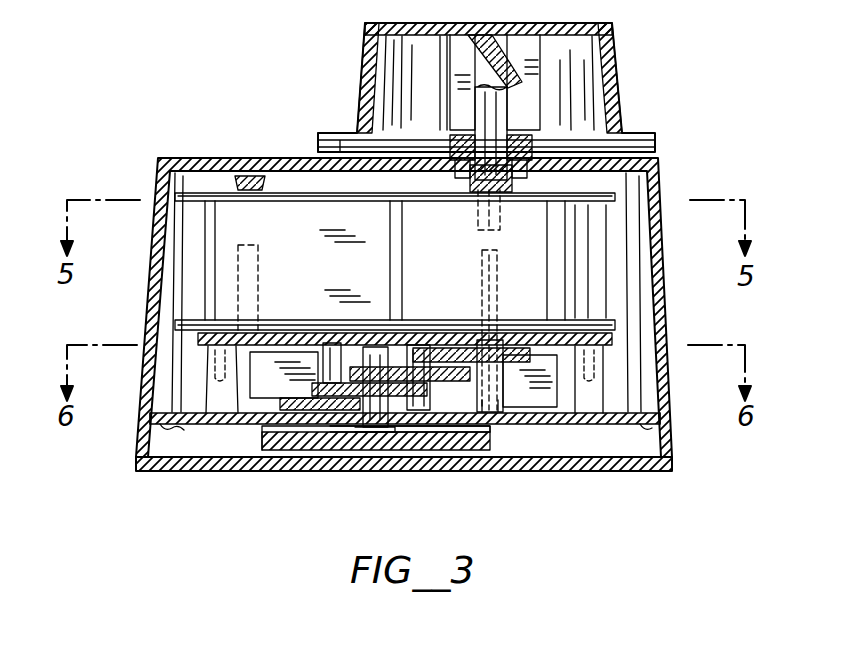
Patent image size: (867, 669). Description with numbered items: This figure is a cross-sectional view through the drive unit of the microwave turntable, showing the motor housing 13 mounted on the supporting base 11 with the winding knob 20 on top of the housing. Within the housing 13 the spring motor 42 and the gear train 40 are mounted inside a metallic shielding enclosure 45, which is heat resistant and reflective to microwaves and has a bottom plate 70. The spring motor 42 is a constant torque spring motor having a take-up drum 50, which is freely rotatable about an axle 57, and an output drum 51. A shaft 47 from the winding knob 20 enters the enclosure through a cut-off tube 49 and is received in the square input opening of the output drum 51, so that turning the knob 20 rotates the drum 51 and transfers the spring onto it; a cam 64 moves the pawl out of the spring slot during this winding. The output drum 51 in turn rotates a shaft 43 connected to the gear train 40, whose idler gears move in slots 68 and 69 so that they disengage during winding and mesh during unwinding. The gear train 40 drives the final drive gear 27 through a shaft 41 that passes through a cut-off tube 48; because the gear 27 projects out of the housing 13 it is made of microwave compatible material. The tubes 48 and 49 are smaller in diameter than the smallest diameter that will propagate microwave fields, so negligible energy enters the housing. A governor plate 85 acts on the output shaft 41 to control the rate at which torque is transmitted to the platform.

The supporting base 11 is at (215, 470).
The motor housing 13 is at (158, 234).
The winding knob 20 is at (362, 63).
The final drive gear 27 is at (490, 451).
The gear train 40 is at (606, 381).
The shaft 41 is at (376, 440).
The spring motor 42 is at (607, 257).
The shaft 43 is at (480, 269).
The shielding enclosure 45 is at (160, 376).
The shaft 47 is at (472, 223).
The cut-off tube 48 is at (364, 433).
The cut-off tube 49 is at (512, 130).
The take-up drum 50 is at (178, 299).
The output drum 51 is at (600, 301).
The axle 57 is at (250, 246).
The cam 64 is at (612, 340).
The slot 68 is at (420, 344).
The slot 69 is at (426, 431).
The bottom plate 70 is at (616, 426).
The governor plate 85 is at (262, 395).